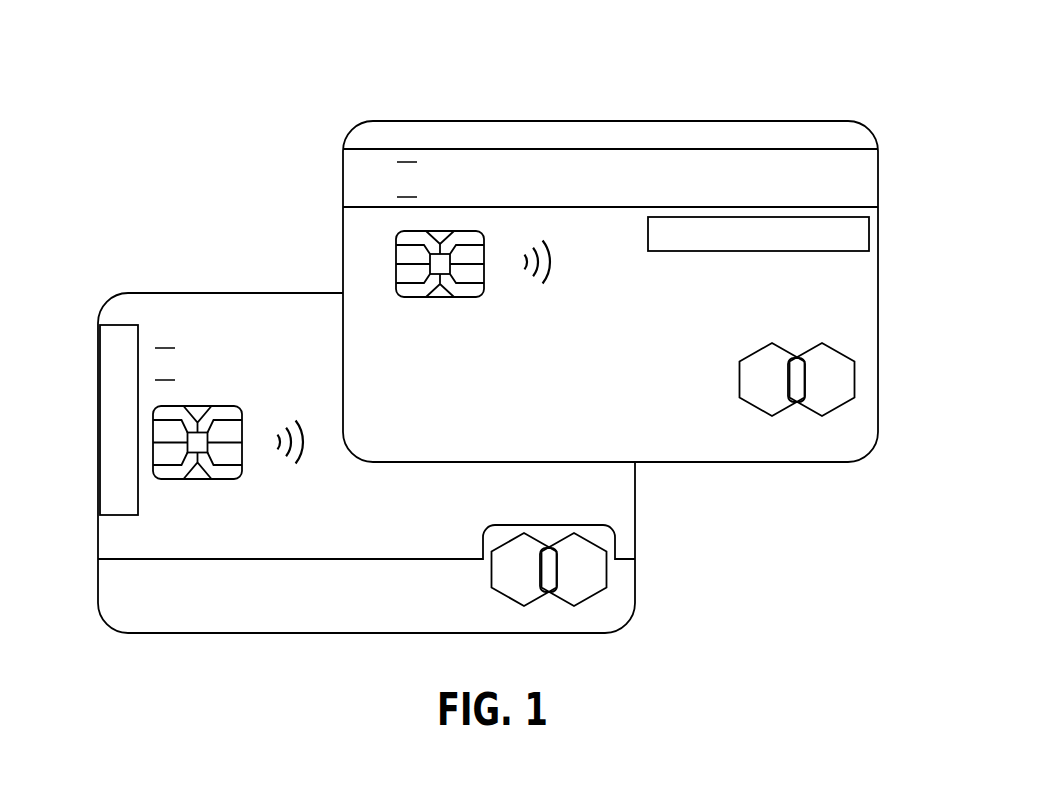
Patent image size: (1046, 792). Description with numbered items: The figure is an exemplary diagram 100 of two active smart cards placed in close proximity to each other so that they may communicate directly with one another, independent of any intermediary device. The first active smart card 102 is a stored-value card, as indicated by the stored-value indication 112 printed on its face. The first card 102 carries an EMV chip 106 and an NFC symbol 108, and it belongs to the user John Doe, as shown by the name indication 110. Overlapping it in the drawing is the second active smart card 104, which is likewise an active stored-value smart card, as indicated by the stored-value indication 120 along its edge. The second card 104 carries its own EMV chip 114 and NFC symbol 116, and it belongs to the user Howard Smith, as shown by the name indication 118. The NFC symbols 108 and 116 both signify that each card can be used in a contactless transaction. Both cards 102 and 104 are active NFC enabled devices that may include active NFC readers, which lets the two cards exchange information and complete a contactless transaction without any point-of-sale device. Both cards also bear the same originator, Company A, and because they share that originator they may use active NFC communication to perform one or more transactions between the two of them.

The diagram 100 is at (126, 44).
The first active smart card 102 is at (590, 121).
The second active smart card 104 is at (218, 293).
The EMV chip 106 is at (484, 245).
The NFC symbol 108 is at (551, 262).
The user name indication 110 is at (548, 407).
The stored-value indication 112 is at (870, 237).
The EMV chip 114 is at (222, 406).
The NFC symbol 116 is at (303, 452).
The user name indication 118 is at (150, 603).
The stored-value indication 120 is at (118, 515).